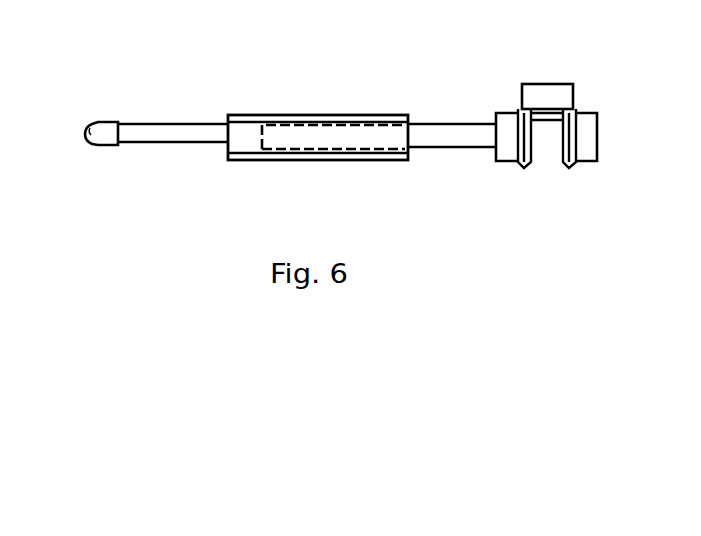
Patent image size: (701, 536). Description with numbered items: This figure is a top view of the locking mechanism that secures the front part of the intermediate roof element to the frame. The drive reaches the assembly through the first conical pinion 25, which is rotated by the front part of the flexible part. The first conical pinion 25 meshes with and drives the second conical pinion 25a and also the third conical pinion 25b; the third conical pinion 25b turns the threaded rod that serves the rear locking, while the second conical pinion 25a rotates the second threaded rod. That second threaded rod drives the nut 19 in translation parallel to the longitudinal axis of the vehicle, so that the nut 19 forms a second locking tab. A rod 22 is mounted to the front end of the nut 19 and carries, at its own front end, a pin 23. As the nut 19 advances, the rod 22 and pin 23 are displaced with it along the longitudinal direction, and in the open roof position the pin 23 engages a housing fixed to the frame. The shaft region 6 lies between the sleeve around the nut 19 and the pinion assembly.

The shaft 6 is at (430, 133).
The nut 19 is at (245, 118).
The rod 22 is at (165, 130).
The pin 23 is at (88, 125).
The first conical pinion 25 is at (545, 93).
The second conical pinion 25a is at (496, 150).
The third conical pinion 25b is at (590, 118).